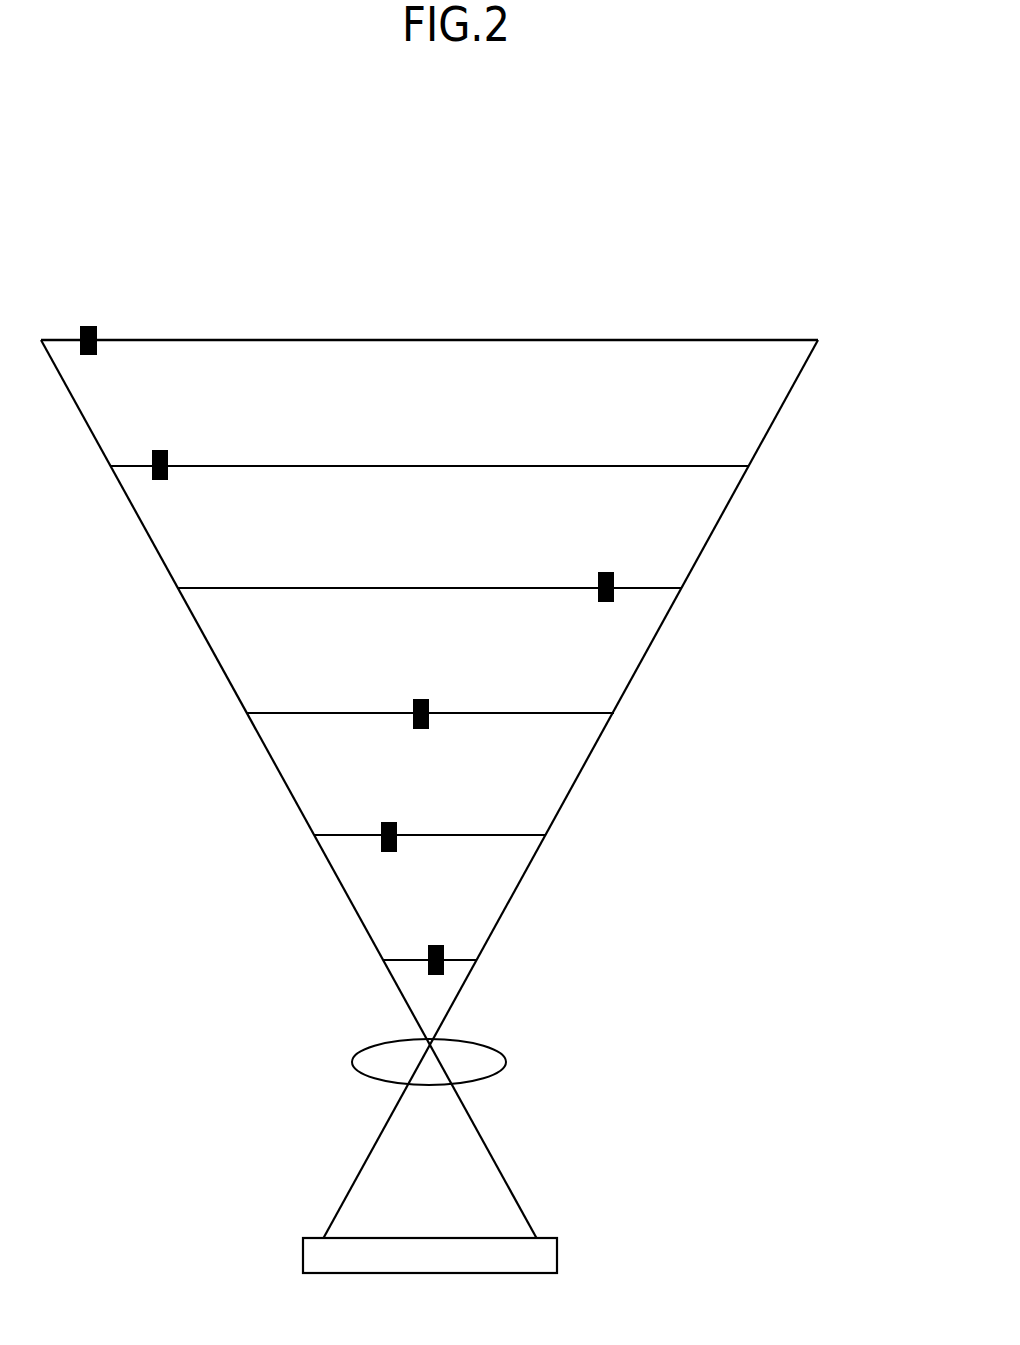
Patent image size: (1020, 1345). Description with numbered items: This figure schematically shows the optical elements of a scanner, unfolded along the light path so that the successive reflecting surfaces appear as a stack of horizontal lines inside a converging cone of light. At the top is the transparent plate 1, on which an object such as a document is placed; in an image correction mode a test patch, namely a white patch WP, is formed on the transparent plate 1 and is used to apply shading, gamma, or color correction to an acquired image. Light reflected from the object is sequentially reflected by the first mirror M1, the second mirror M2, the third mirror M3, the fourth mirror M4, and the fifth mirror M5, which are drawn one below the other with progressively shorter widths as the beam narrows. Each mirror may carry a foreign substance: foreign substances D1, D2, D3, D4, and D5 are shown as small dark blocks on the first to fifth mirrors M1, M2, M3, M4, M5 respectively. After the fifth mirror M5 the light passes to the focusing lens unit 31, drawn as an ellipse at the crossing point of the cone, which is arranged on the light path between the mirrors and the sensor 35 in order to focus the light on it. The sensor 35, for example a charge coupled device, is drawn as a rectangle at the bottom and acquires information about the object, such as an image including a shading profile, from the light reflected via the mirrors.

The transparent plate 1 is at (805, 338).
The white patch WP is at (89, 326).
The foreign substance D1 is at (160, 450).
The foreign substance D2 is at (606, 572).
The foreign substance D3 is at (421, 699).
The foreign substance D4 is at (389, 822).
The foreign substance D5 is at (436, 945).
The first mirror M1 is at (737, 465).
The second mirror M2 is at (670, 587).
The third mirror M3 is at (602, 712).
The fourth mirror M4 is at (534, 834).
The fifth mirror M5 is at (466, 959).
The focusing lens unit 31 is at (506, 1062).
The sensor 35 is at (552, 1256).